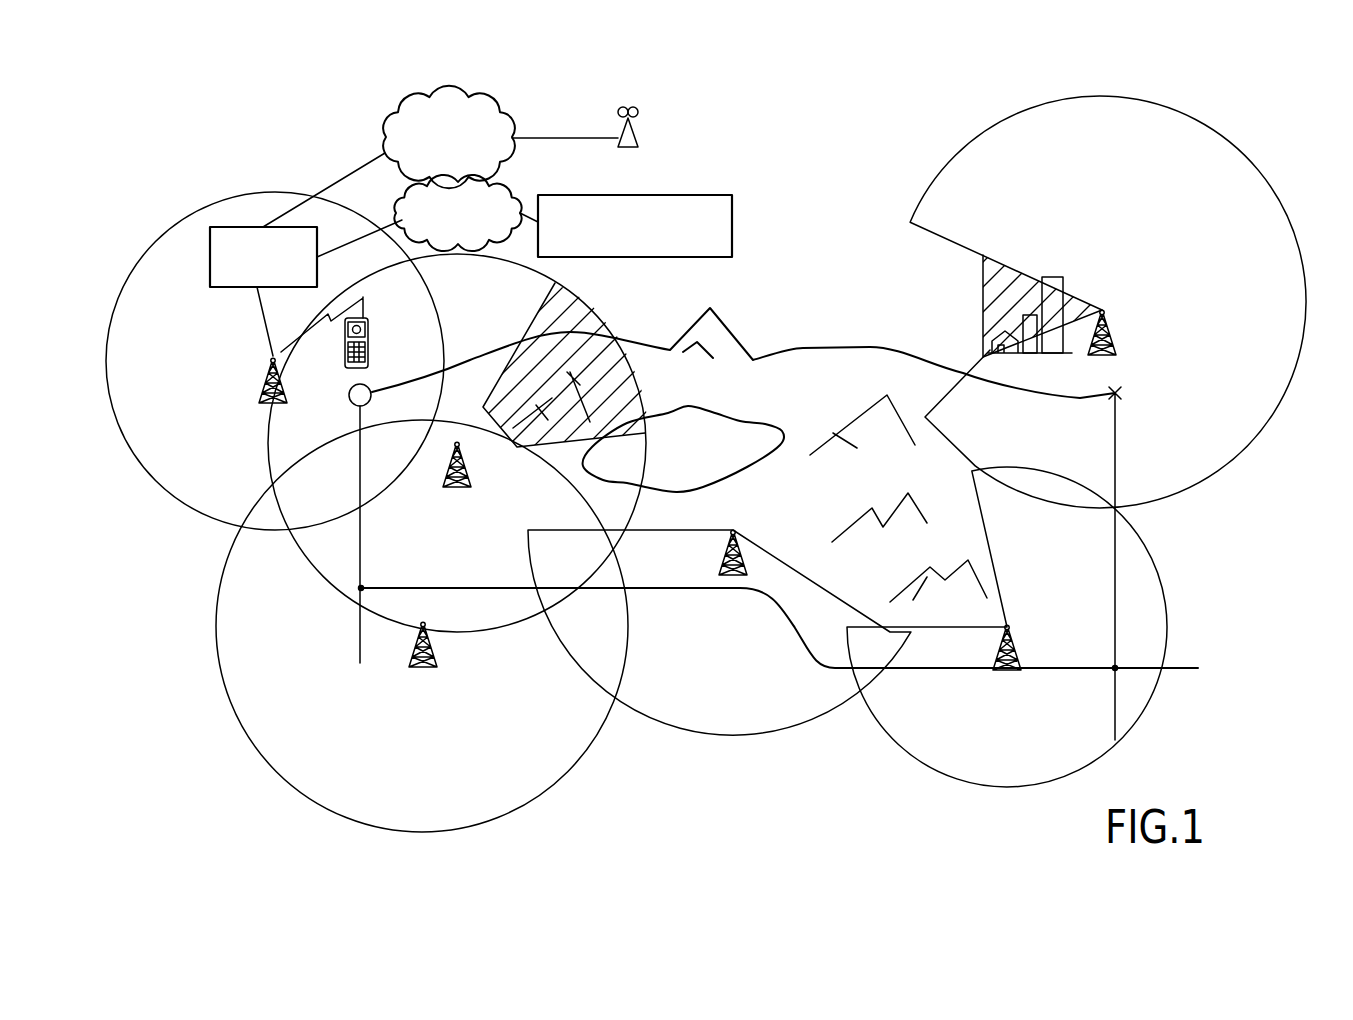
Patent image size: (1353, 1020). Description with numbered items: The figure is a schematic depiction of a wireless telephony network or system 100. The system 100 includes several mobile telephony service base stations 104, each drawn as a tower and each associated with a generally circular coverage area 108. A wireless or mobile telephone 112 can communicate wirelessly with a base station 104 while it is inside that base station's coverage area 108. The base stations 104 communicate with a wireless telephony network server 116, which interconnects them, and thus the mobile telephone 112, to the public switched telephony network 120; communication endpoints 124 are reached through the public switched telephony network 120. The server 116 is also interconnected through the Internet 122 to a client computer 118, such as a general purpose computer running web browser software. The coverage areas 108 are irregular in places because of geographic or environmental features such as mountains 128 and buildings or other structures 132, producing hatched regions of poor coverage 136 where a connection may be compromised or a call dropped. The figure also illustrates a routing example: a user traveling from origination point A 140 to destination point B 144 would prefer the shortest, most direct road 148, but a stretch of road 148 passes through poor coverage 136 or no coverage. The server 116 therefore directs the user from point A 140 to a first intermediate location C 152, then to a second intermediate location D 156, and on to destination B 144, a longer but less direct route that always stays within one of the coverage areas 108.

The wireless telephony network or system 100 is at (855, 166).
The base station 104 is at (262, 391).
The coverage area 108 is at (430, 280).
The mobile telephone 112 is at (370, 333).
The wireless telephony network server 116 is at (228, 227).
The client computer 118 is at (565, 197).
The public switched telephony network 120 is at (490, 97).
The Internet 122 is at (497, 190).
The communication endpoint 124 is at (640, 145).
The mountains 128 is at (530, 371).
The buildings or other structures 132 is at (1063, 277).
The poor coverage area 136 is at (584, 313).
The origination point A 140 is at (355, 398).
The destination point B 144 is at (1120, 395).
The road 148 is at (808, 348).
The first intermediate location C 152 is at (357, 595).
The second intermediate location D 156 is at (1113, 670).